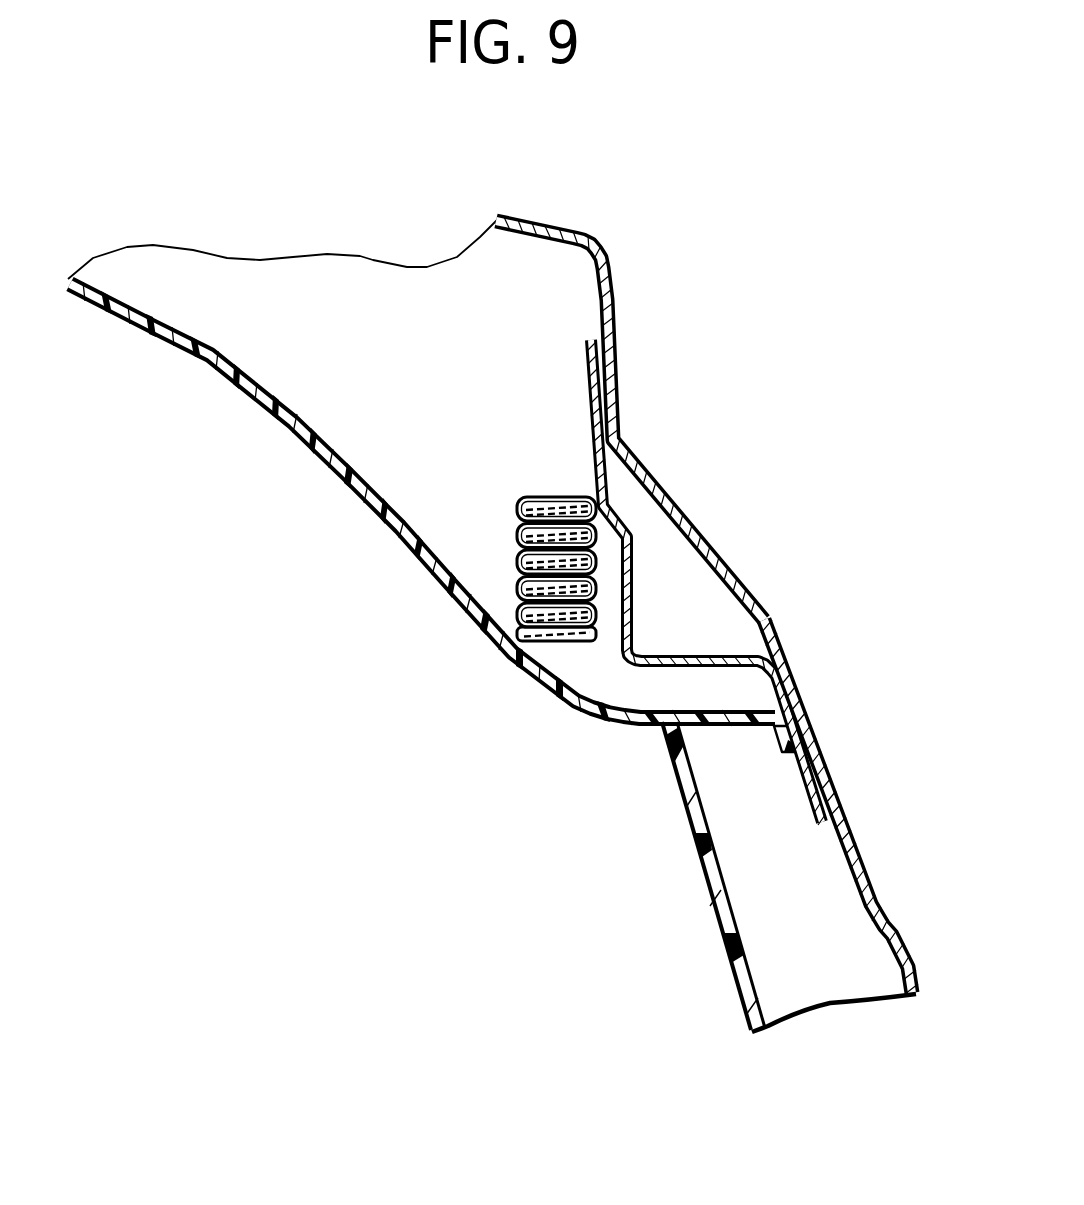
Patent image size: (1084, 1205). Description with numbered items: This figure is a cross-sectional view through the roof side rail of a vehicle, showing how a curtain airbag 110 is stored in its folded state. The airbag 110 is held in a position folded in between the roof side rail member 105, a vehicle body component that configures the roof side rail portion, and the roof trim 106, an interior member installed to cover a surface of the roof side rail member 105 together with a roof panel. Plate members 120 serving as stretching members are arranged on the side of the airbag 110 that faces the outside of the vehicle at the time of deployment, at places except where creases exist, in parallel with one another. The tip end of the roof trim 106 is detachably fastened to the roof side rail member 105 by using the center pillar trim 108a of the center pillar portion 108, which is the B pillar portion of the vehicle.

The roof side rail member 105 is at (608, 348).
The roof trim 106 is at (376, 501).
The center pillar portion 108 is at (866, 856).
The center pillar trim 108a is at (709, 873).
The curtain airbag 110 is at (512, 591).
The plate member 120 is at (556, 642).